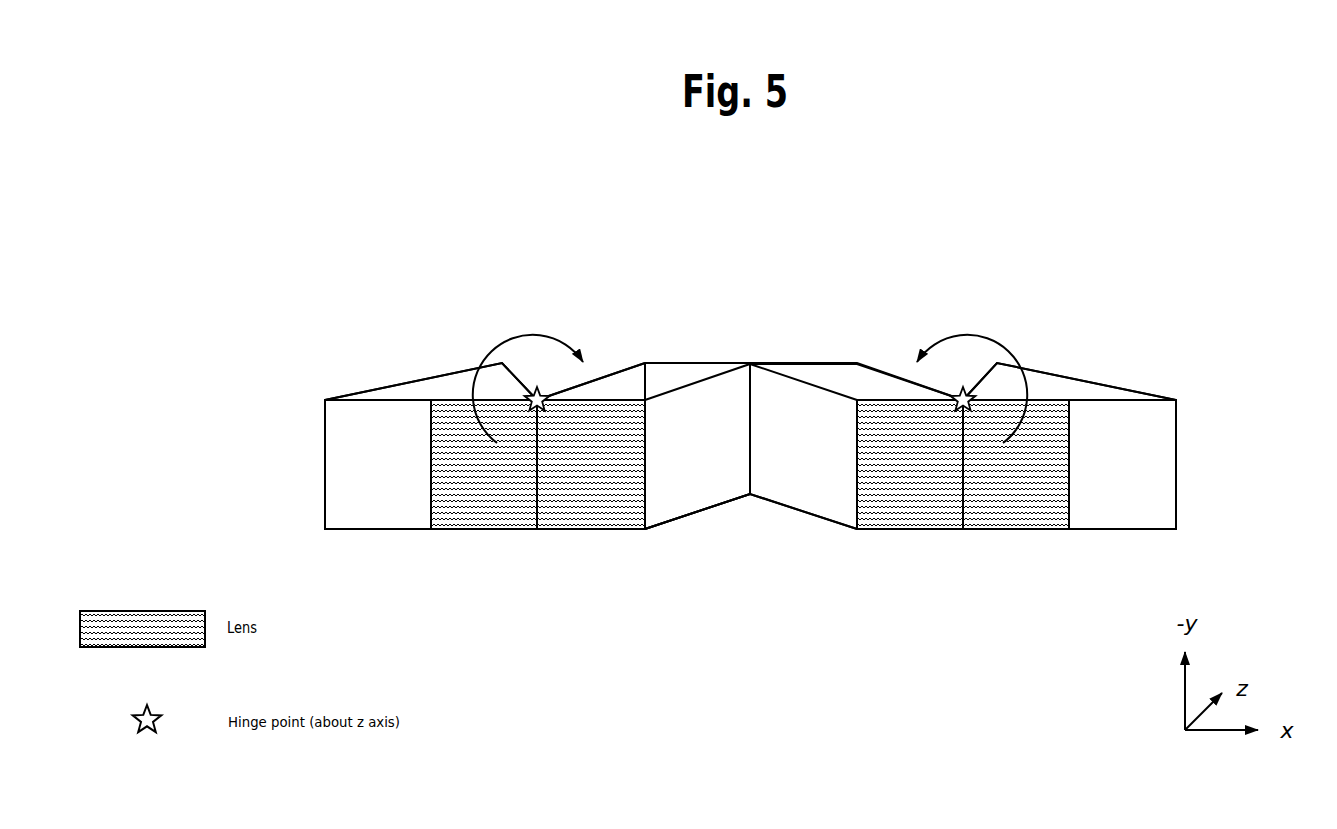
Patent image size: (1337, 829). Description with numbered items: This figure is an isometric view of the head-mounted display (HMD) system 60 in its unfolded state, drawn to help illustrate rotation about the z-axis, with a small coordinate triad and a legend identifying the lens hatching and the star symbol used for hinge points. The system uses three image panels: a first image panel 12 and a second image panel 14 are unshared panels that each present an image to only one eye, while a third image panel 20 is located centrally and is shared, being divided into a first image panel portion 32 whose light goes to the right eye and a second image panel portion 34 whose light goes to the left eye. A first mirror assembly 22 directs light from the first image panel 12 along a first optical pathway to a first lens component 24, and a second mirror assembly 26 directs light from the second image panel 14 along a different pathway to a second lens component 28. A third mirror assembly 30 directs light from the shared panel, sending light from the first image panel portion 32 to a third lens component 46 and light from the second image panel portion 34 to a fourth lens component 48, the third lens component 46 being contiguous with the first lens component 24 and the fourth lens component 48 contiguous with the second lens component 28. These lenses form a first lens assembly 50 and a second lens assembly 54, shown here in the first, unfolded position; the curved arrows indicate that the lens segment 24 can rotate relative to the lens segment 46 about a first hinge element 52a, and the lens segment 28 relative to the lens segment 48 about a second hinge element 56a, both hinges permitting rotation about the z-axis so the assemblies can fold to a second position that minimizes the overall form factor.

The first image panel 12 is at (1123, 529).
The second image panel 14 is at (392, 529).
The third image panel 20 is at (750, 362).
The first mirror assembly 22 is at (1070, 371).
The first lens component 24 is at (1037, 529).
The second mirror assembly 26 is at (387, 372).
The second lens component 28 is at (502, 529).
The third mirror assembly 30 is at (749, 505).
The first image panel portion 32 is at (807, 364).
The second image panel portion 34 is at (693, 364).
The third lens component 46 is at (898, 529).
The fourth lens component 48 is at (612, 529).
The first lens assembly 50 is at (963, 400).
The first hinge element 52a is at (957, 342).
The second lens assembly 54 is at (537, 400).
The second hinge element 56a is at (555, 343).
The HMD system 60 is at (894, 205).